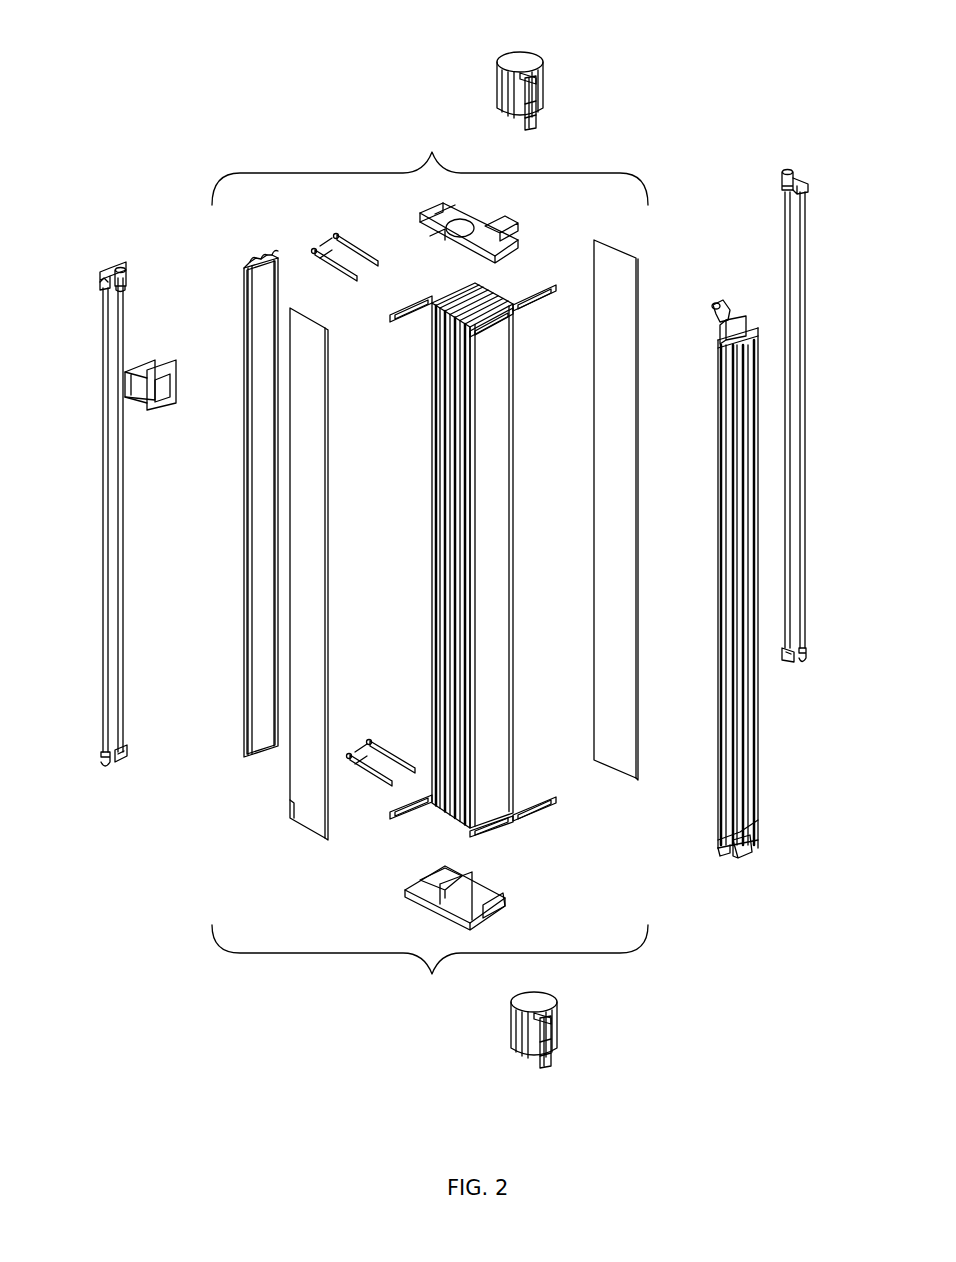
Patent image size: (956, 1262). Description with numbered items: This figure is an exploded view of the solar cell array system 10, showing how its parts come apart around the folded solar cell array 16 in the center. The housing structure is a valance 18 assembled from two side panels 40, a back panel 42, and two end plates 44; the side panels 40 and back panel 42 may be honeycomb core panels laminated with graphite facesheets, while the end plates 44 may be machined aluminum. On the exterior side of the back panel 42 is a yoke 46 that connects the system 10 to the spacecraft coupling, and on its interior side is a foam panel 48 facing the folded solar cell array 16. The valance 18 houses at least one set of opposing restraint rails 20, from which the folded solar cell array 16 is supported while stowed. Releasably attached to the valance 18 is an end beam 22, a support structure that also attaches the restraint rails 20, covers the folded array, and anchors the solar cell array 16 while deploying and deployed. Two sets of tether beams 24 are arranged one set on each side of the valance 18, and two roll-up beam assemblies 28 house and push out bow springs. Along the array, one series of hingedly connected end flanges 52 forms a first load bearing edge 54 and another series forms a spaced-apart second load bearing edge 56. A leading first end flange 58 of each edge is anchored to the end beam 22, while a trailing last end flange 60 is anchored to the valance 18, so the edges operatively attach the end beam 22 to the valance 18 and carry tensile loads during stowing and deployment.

The solar cell array system 10 is at (204, 66).
The solar cell array 16 is at (520, 498).
The valance 18 is at (432, 150).
The restraint rails 20 is at (322, 256).
The end beam 22 is at (756, 790).
The tether beams 24 is at (103, 499).
The roll-up beam assemblies 28 is at (541, 42).
The side panels 40 is at (300, 808).
The back panel 42 is at (243, 330).
The end plates 44 is at (420, 226).
The yoke 46 is at (160, 362).
The foam panel 48 is at (256, 706).
The end flanges 52 is at (484, 333).
The first load bearing edge 54 is at (428, 322).
The second load bearing edge 56 is at (445, 818).
The first end flange 58 is at (546, 303).
The last end flange 60 is at (396, 314).